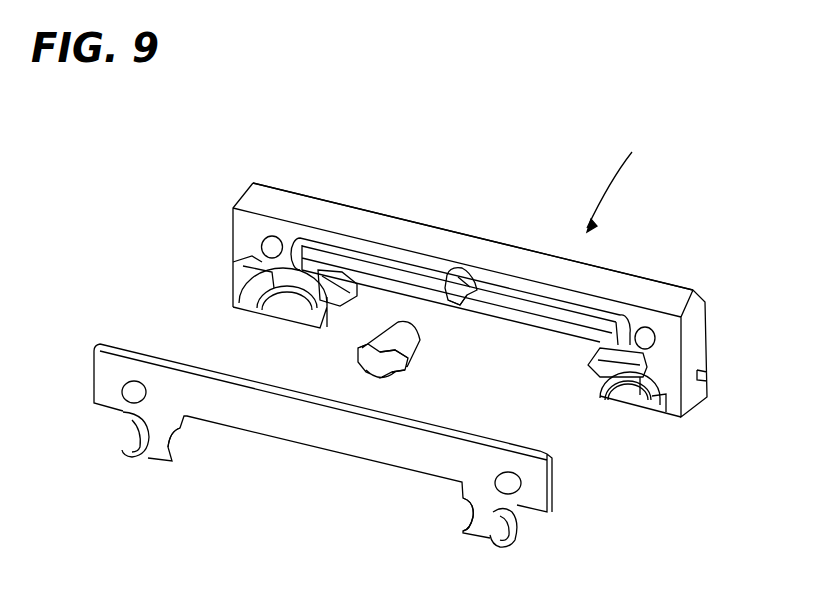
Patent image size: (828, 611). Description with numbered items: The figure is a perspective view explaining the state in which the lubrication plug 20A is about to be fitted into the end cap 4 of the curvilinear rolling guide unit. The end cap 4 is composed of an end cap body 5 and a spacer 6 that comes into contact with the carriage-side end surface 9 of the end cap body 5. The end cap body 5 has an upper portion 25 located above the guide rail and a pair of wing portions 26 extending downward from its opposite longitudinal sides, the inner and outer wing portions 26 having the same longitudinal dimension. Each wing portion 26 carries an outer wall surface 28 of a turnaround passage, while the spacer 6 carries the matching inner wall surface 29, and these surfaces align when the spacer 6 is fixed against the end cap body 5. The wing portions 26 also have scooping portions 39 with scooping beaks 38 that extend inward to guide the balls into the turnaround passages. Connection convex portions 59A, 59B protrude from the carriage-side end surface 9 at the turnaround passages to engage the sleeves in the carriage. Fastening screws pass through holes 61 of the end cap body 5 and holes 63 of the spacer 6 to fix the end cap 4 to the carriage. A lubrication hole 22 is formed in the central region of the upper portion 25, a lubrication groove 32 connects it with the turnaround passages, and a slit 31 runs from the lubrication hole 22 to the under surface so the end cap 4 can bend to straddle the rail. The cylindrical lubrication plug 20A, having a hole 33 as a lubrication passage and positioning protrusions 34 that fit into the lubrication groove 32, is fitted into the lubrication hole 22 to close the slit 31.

The end cap 4 is at (613, 178).
The end cap body 5 is at (453, 237).
The spacer 6 is at (183, 384).
The carriage-side end surface 9 is at (530, 283).
The lubrication plug 20A is at (408, 347).
The lubrication hole 22 is at (465, 266).
The upper portion 25 is at (383, 252).
The wing portion 26 is at (233, 285).
The outer wall surface 28 is at (275, 295).
The inner wall surface 29 is at (187, 440).
The slit 31 is at (457, 308).
The lubrication groove 32 is at (340, 252).
The hole 33 is at (398, 353).
The positioning protrusions 34 is at (404, 372).
The scooping beak 38 is at (340, 297).
The scooping portion 39 is at (320, 313).
The connection convex portion 59A is at (250, 268).
The connection convex portion 59B is at (153, 457).
The hole 61 is at (271, 240).
The hole 63 is at (130, 380).